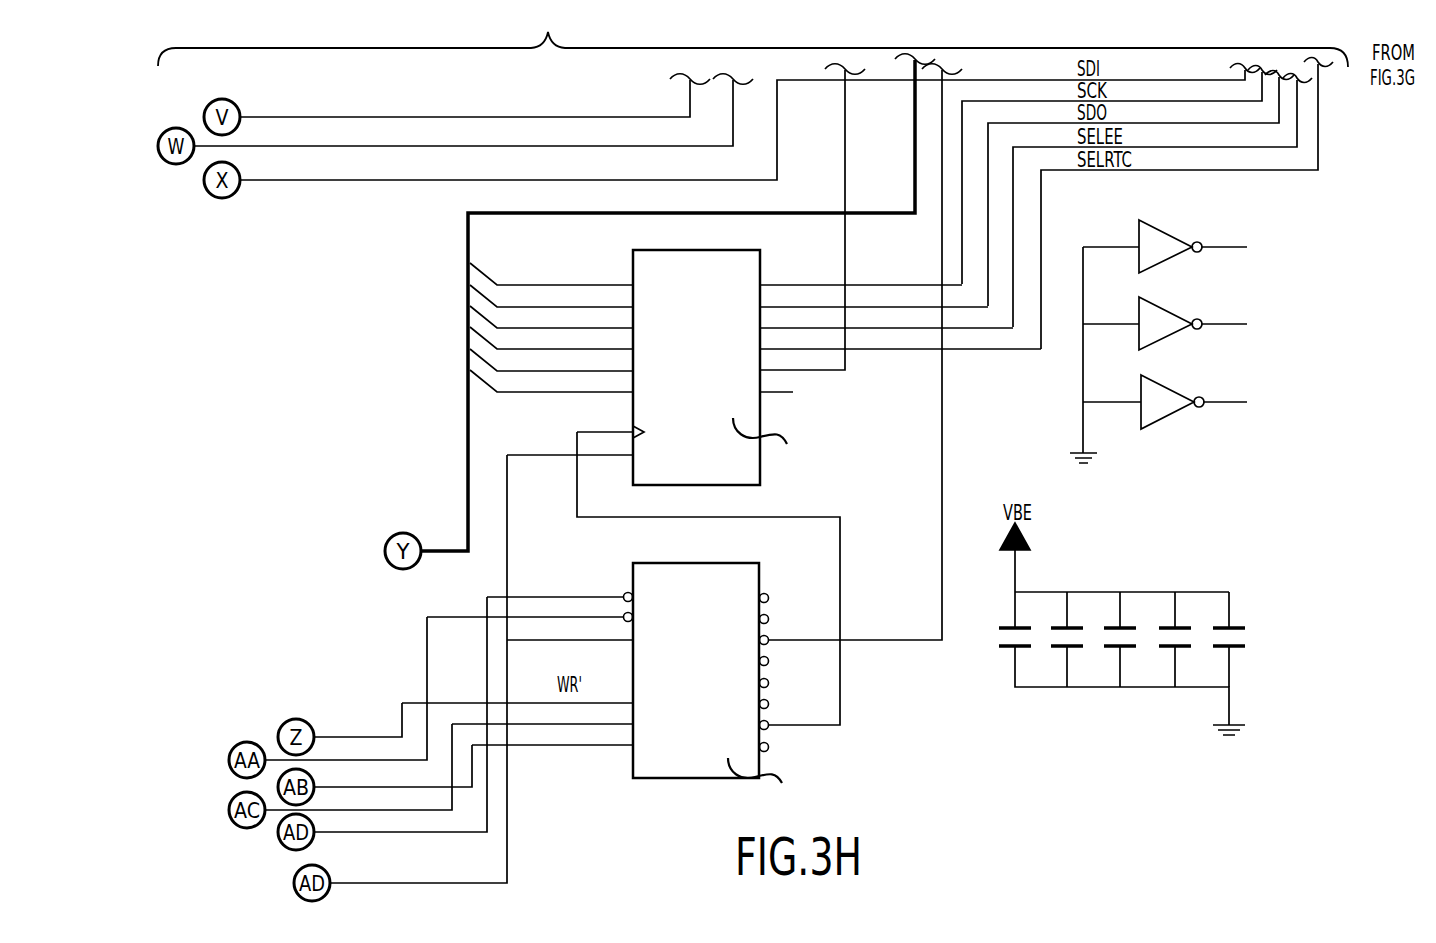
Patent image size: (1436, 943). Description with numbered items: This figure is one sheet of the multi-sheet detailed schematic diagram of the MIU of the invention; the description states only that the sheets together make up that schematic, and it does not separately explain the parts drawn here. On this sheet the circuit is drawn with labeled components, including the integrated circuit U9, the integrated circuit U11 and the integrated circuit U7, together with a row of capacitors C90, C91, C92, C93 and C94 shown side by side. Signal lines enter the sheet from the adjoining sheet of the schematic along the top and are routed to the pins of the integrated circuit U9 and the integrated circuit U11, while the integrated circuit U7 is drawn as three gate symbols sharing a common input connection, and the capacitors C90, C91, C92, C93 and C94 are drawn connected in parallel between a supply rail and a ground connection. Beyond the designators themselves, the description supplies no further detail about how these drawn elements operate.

The 74HC174 hex D-type flip-flop U9 is at (728, 369).
The 74HC138 3-to-8 line decoder U11 is at (759, 677).
The 74HC04 hex inverter U7 is at (1158, 318).
The 0.1 uF decoupling capacitor C90 is at (1002, 624).
The 0.1 uF decoupling capacitor C91 is at (1062, 639).
The 0.1 uF decoupling capacitor C92 is at (1117, 639).
The 0.1 uF decoupling capacitor C93 is at (1168, 639).
The 0.1 uF decoupling capacitor C94 is at (1223, 639).